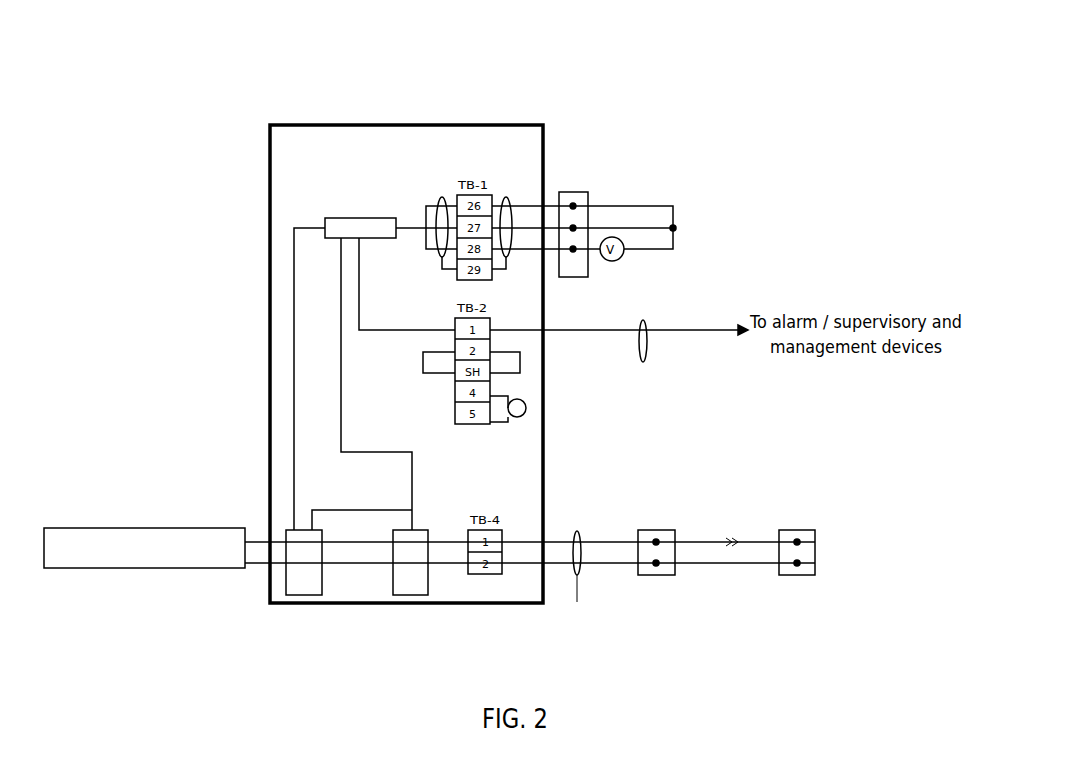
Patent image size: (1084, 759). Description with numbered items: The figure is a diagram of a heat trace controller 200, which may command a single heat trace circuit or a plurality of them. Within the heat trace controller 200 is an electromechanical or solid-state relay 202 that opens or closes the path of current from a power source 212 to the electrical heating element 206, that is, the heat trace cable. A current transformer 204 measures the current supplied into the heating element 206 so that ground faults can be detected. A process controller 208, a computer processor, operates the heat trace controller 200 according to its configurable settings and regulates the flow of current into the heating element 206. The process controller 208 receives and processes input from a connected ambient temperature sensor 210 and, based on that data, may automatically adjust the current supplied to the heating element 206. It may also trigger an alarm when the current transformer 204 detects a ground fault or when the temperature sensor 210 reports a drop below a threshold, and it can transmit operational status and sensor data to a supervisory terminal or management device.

The heat trace controller 200 is at (419, 84).
The solid-state relay 202 is at (302, 595).
The current transformer 204 is at (408, 595).
The electrical heating element 206 is at (737, 563).
The process controller 208 is at (342, 218).
The ambient temperature sensor 210 is at (574, 192).
The power source 212 is at (168, 528).